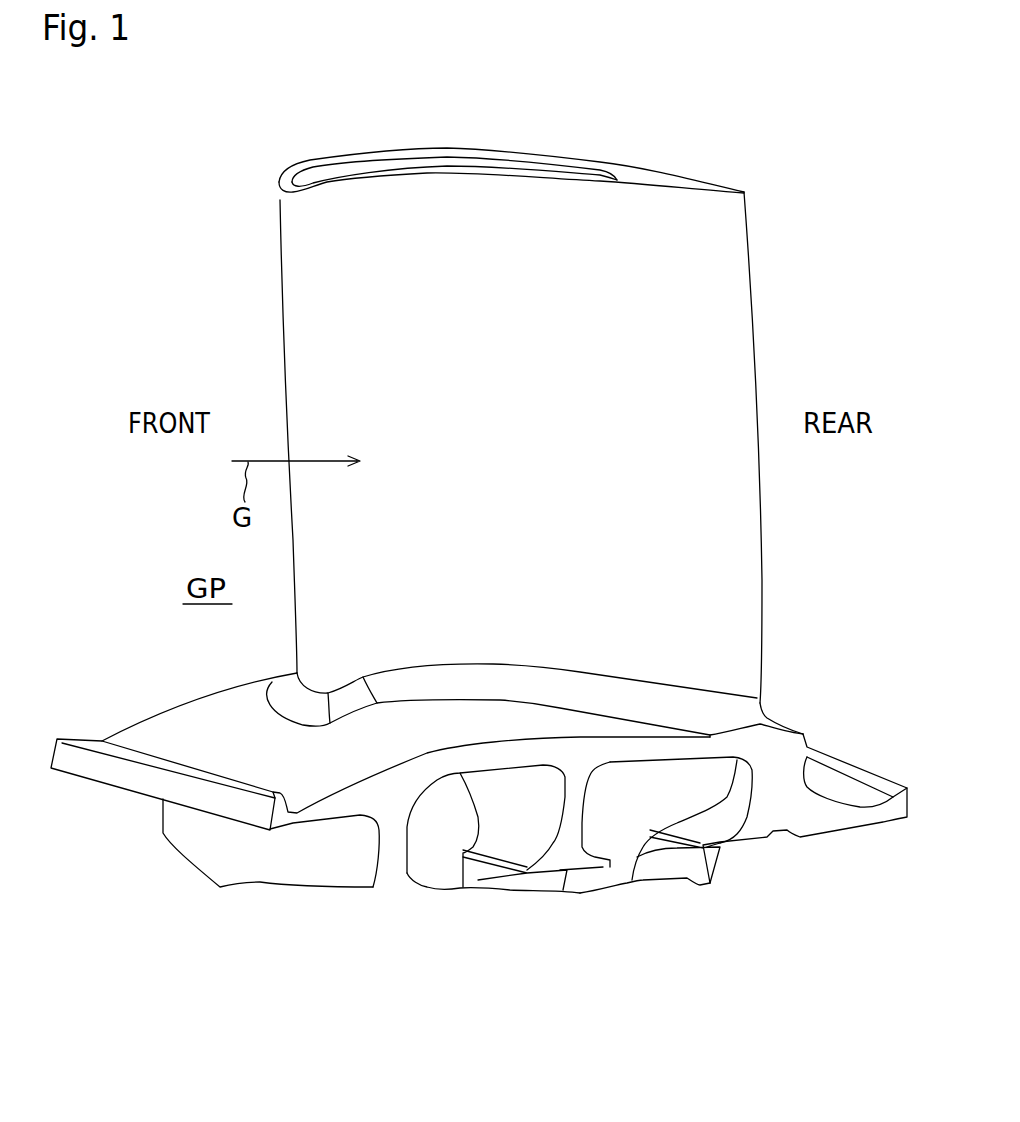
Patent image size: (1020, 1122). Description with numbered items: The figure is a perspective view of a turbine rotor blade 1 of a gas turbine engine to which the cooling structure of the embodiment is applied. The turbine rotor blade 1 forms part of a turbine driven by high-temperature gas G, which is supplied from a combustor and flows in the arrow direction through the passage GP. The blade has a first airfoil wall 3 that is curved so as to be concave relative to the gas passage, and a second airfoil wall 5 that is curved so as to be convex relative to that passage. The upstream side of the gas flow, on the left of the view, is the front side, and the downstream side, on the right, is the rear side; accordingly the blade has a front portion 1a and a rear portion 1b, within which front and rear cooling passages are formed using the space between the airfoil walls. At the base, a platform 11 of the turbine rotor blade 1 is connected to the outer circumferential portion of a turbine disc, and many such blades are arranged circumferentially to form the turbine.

The turbine rotor blade 1 is at (300, 245).
The front portion 1a is at (307, 355).
The rear portion 1b is at (752, 369).
The first airfoil wall 3 is at (428, 253).
The second airfoil wall 5 is at (505, 156).
The platform 11 is at (183, 717).